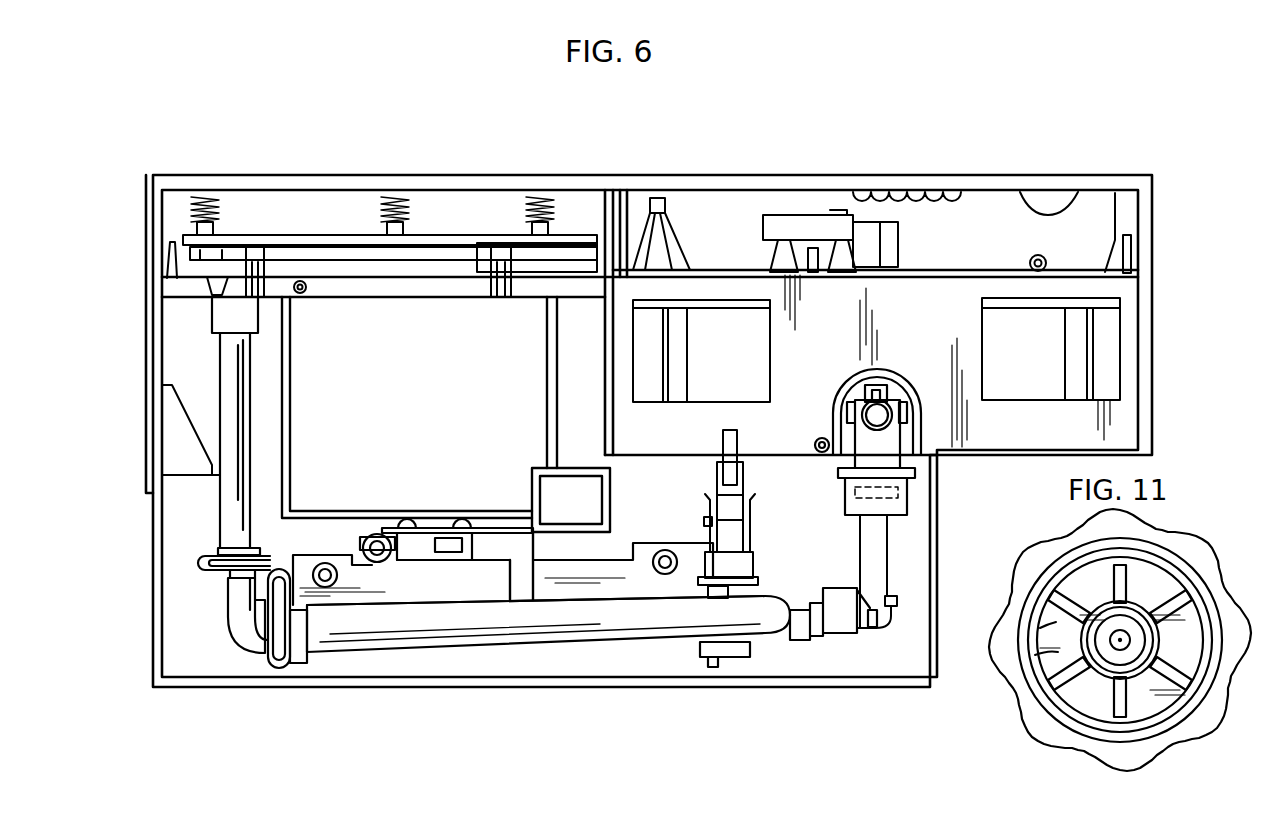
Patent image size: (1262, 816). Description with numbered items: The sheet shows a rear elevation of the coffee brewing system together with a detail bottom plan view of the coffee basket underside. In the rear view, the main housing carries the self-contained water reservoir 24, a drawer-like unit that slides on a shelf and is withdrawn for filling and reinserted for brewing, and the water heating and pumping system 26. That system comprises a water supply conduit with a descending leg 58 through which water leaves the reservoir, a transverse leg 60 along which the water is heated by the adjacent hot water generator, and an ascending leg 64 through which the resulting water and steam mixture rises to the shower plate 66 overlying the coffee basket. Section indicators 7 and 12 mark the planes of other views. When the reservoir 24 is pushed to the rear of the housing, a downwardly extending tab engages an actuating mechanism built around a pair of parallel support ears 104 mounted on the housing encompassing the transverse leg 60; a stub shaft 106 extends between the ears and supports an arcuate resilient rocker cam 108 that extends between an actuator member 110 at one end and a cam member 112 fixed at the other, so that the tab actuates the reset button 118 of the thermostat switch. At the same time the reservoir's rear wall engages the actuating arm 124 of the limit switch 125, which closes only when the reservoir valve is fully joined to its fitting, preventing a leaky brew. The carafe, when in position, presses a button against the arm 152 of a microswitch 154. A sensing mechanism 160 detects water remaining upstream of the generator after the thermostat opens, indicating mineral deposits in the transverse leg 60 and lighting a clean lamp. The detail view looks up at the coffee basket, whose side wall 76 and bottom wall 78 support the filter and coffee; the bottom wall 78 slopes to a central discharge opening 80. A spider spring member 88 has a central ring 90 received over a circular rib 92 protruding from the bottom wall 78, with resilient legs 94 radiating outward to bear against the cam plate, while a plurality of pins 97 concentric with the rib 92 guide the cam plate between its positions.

In FIG. 6, the section line 7- 7 is at (740, 752).
In FIG. 6, the section line 12- 12 is at (876, 760).
In FIG. 6, the water reservoir 24 is at (1040, 358).
In FIG. 6, the water heating and pumping system 26 is at (458, 660).
In FIG. 6, the descending leg 58 is at (880, 566).
In FIG. 6, the transverse leg 60 is at (462, 638).
In FIG. 6, the ascending leg 64 is at (260, 388).
In FIG. 6, the shower plate 66 is at (262, 290).
In FIG. 11, the side wall 76 is at (1210, 572).
In FIG. 11, the bottom wall 78 is at (1165, 700).
In FIG. 11, the discharge opening 80 is at (1128, 637).
In FIG. 11, the spider spring member 88 is at (1070, 596).
In FIG. 11, the central ring 90 is at (1040, 629).
In FIG. 11, the circular rib 92 is at (1105, 662).
In FIG. 11, the resilient legs 94 is at (1052, 660).
In FIG. 11, the pins 97 is at (1155, 560).
In FIG. 6, the support ears 104 is at (750, 532).
In FIG. 6, the stub shaft 106 is at (704, 523).
In FIG. 6, the rocker cam 108 is at (745, 478).
In FIG. 6, the actuator member 110 is at (728, 505).
In FIG. 6, the cam member 112 is at (728, 440).
In FIG. 6, the reset button 118 is at (758, 560).
In FIG. 6, the actuating arm 124 is at (893, 246).
In FIG. 6, the limit switch 125 is at (763, 232).
In FIG. 6, the arm 152 is at (378, 545).
In FIG. 6, the microswitch 154 is at (419, 548).
In FIG. 6, the sensing mechanism 160 is at (915, 514).